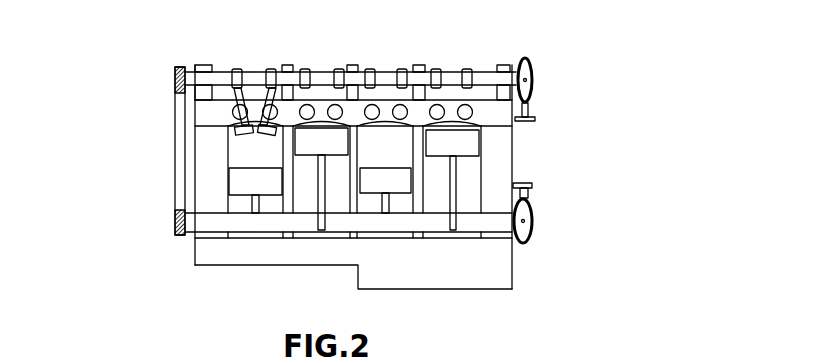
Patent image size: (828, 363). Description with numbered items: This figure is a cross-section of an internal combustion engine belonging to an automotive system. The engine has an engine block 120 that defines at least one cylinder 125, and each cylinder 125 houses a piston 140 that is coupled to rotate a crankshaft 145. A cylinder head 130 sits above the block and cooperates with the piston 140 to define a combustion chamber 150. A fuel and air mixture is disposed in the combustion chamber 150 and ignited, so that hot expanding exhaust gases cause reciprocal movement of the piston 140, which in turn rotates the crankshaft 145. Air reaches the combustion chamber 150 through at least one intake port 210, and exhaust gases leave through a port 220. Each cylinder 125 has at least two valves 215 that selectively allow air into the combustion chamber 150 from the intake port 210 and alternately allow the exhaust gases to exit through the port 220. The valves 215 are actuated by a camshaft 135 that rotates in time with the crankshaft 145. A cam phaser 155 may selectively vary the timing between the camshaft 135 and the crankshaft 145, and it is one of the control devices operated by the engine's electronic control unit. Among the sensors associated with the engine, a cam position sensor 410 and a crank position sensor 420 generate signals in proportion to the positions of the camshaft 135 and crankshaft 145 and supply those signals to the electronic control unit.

The engine block 120 is at (195, 170).
The cylinder 125 is at (353, 163).
The cylinder head 130 is at (193, 120).
The camshaft 135 is at (252, 70).
The piston 140 is at (392, 183).
The crankshaft 145 is at (222, 225).
The combustion chamber 150 is at (453, 128).
The cam phaser 155 is at (175, 72).
The intake port 210 is at (375, 112).
The valves 215 is at (238, 118).
The exhaust port 220 is at (330, 105).
The cam position sensor 410 is at (532, 117).
The crank position sensor 420 is at (522, 193).